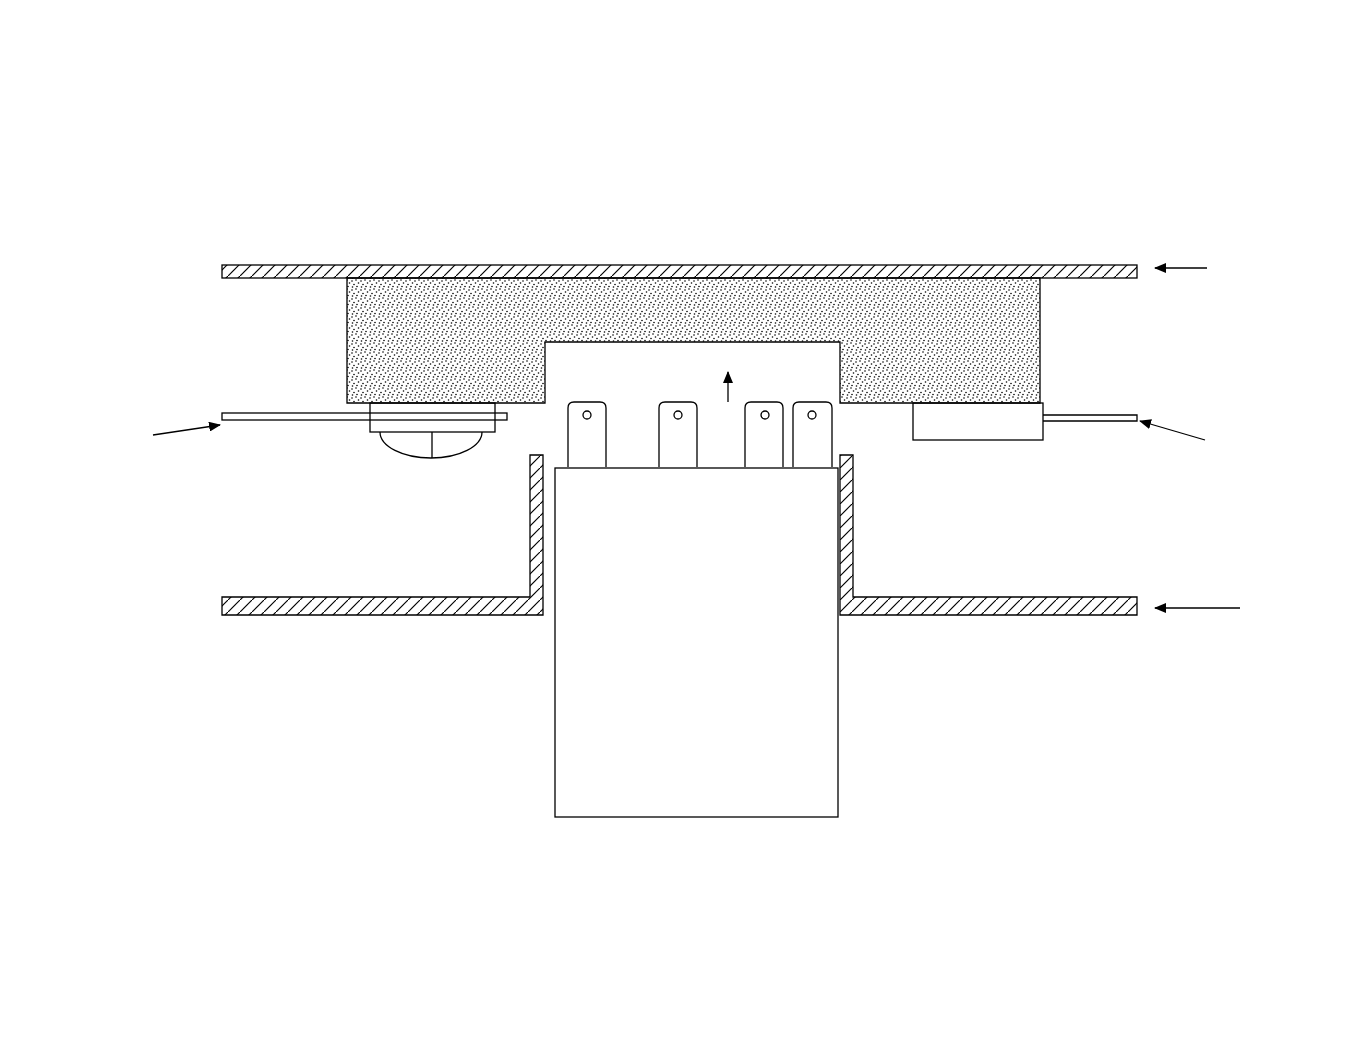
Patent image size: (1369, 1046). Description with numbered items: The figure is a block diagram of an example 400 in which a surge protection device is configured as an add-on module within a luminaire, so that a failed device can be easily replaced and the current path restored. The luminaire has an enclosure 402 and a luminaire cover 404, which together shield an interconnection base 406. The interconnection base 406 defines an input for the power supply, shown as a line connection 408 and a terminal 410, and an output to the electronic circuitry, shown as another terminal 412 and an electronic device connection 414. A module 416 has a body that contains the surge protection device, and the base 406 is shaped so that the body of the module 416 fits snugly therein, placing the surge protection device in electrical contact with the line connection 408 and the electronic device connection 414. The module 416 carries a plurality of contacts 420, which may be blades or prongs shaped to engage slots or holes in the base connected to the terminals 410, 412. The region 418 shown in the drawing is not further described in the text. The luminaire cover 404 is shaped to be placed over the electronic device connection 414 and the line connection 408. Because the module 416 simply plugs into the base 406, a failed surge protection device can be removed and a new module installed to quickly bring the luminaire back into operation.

The example 400 is at (252, 140).
The enclosure 402 is at (748, 265).
The luminaire cover 404 is at (318, 615).
The interconnection base 406 is at (428, 325).
The line connection 408 is at (230, 420).
The terminal 410 is at (383, 440).
The terminal 412 is at (1020, 430).
The electronic device connection 414 is at (1140, 412).
The module 416 is at (807, 711).
The receptacle 418 is at (690, 358).
The contacts 420 is at (807, 398).